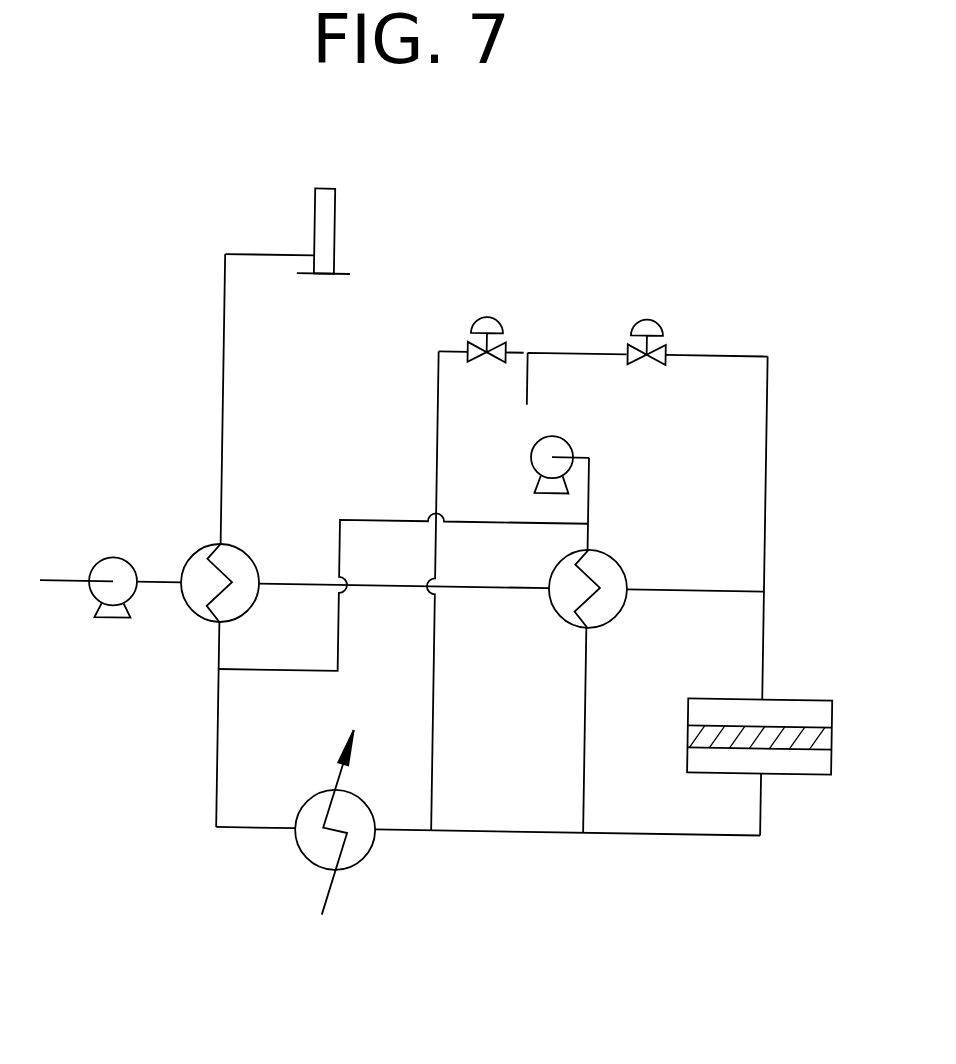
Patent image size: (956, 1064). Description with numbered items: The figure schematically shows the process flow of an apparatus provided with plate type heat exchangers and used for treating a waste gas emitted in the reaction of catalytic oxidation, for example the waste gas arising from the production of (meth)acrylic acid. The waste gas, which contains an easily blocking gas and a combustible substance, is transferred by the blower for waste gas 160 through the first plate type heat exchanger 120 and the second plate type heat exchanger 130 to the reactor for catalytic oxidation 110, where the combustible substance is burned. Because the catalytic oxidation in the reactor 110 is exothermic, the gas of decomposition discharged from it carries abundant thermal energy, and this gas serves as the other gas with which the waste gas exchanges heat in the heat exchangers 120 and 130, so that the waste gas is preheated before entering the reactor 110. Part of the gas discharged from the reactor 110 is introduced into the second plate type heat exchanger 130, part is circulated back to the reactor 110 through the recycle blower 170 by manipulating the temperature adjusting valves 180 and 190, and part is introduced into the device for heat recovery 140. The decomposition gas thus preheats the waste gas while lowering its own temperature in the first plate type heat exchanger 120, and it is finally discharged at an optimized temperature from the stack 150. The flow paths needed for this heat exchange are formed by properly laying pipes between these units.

The reactor for catalytic oxidation 110 is at (805, 701).
The first plate type heat exchanger 120 is at (242, 565).
The second plate type heat exchanger 130 is at (612, 554).
The device for heat recovery 140 is at (364, 840).
The stack 150 is at (329, 220).
The blower for waste gas 160 is at (113, 559).
The recycle blower 170 is at (555, 442).
The temperature adjusting valve 180 is at (646, 316).
The temperature adjusting valve 190 is at (486, 319).